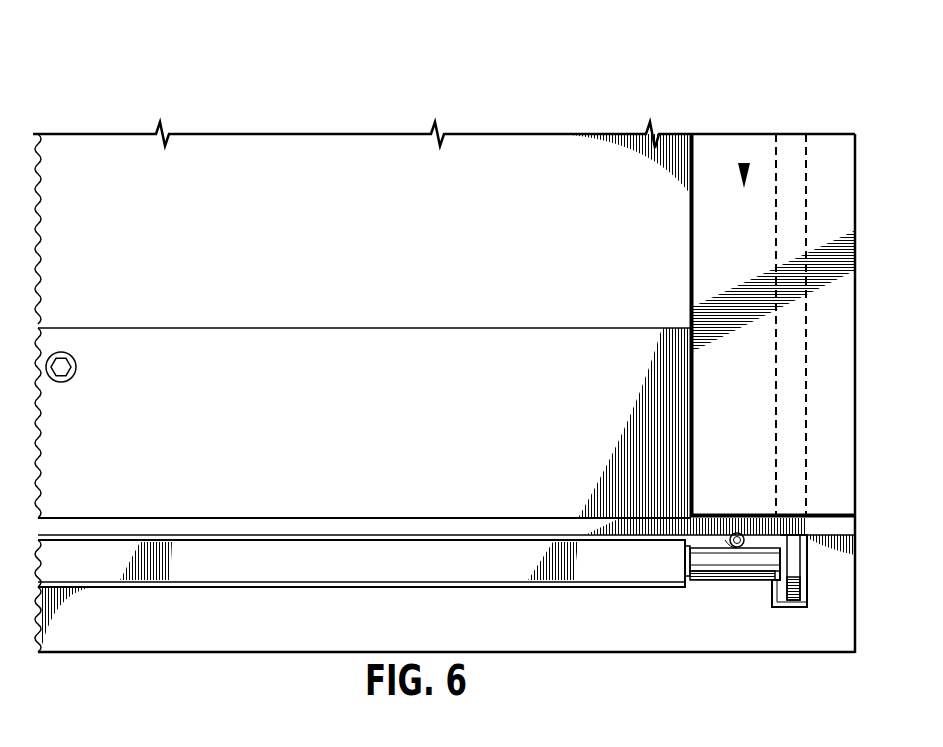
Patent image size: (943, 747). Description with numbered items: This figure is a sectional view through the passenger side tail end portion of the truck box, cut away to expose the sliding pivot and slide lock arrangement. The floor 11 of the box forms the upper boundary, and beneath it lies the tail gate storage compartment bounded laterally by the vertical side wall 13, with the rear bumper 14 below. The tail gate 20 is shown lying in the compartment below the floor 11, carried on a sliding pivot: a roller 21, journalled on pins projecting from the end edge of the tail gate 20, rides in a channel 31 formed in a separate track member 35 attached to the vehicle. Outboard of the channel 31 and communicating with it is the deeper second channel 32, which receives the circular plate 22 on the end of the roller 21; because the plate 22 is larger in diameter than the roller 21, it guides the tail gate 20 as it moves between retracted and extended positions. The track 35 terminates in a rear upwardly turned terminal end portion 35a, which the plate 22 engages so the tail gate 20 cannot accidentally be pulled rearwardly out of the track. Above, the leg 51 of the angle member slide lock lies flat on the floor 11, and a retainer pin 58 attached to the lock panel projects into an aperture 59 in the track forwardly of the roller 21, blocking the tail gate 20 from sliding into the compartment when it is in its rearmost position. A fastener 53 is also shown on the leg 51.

The floor 11 is at (355, 212).
The leg 51 is at (348, 446).
The vertical side wall 13 is at (718, 394).
The rear bumper 14 is at (271, 641).
The tail gate 20 is at (271, 574).
The roller 21 is at (713, 568).
The circular plate 22 is at (786, 587).
The channel 31 is at (719, 165).
The second channel 32 is at (790, 153).
The track member 35 is at (745, 165).
The upwardly turned terminal end portion 35a is at (805, 582).
The fastener 53 is at (61, 352).
The retainer pin 58 is at (737, 533).
The aperture 59 is at (727, 542).